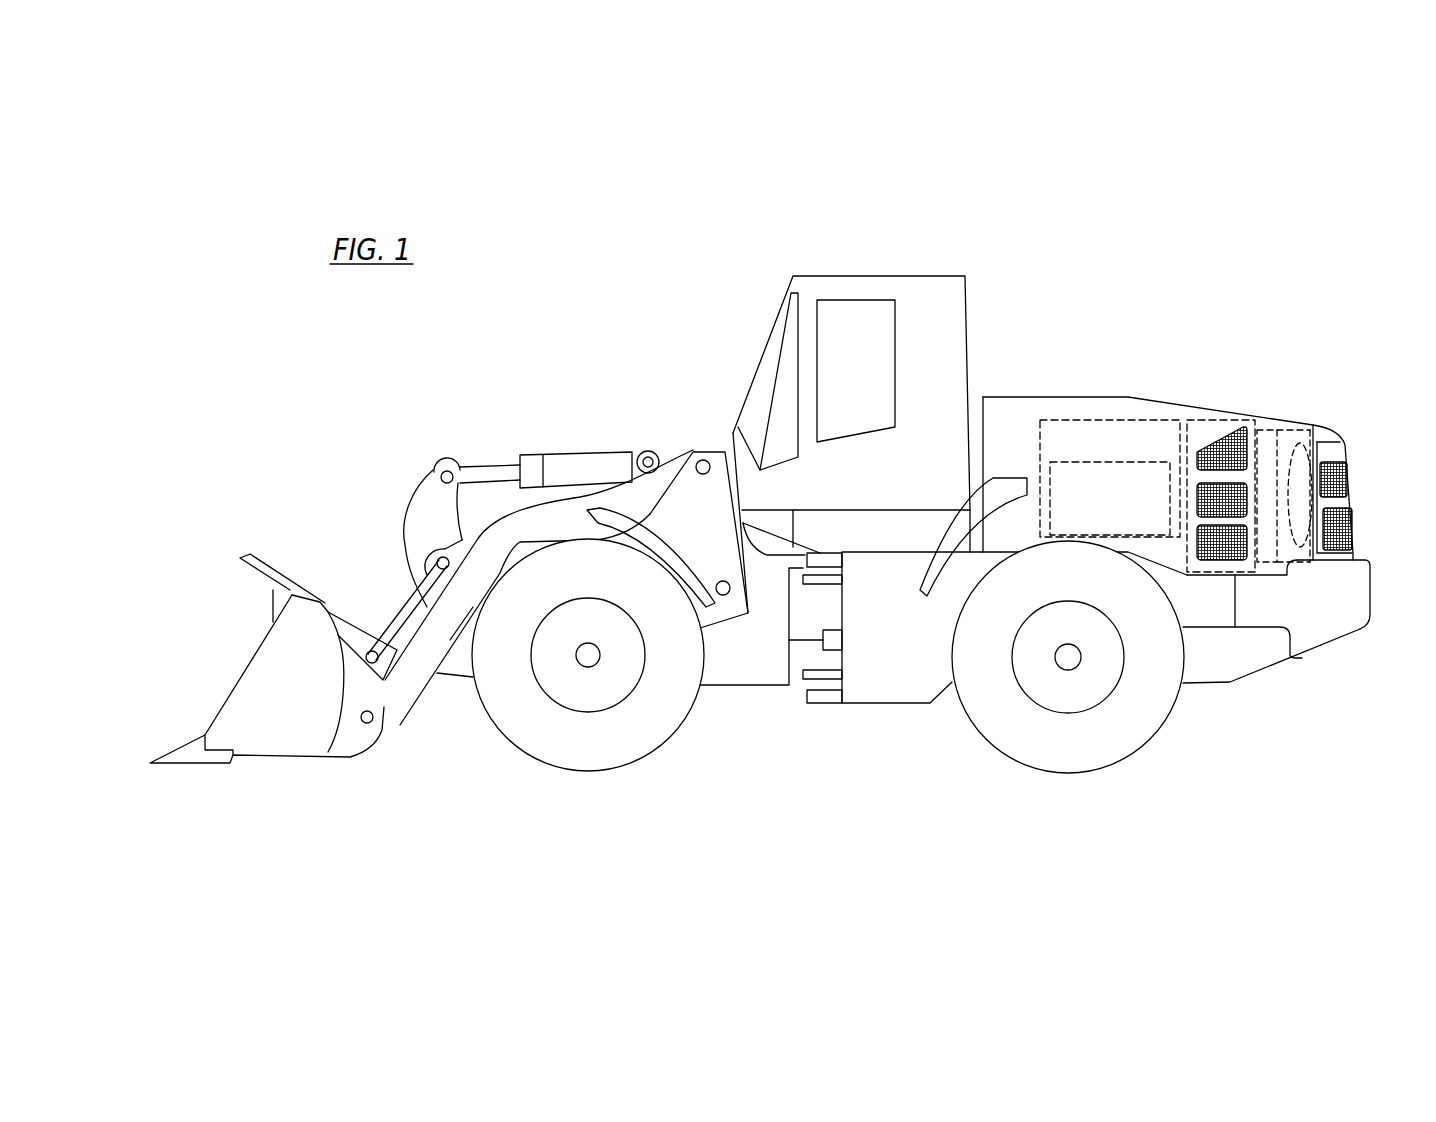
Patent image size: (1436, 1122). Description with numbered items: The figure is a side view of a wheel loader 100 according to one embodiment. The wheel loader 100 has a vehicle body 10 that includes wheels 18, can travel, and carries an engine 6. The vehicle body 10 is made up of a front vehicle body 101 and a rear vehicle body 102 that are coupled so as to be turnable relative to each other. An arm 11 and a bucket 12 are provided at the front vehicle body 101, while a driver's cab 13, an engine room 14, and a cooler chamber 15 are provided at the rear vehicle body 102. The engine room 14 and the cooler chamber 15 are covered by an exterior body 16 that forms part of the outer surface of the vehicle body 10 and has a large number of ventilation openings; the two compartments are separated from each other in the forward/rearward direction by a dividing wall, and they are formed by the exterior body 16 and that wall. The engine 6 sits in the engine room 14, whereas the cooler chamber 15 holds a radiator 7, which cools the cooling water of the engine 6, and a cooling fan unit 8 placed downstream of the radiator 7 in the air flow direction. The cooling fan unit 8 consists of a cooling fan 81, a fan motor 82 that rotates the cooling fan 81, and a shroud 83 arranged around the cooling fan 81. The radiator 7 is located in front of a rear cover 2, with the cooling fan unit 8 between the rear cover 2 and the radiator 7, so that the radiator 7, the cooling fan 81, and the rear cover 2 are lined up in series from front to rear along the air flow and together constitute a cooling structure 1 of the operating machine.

The wheel loader 100 is at (513, 248).
The cooling structure 1 is at (1377, 328).
The rear cover 2 is at (1330, 427).
The engine 6 is at (1108, 462).
The radiator 7 is at (1270, 420).
The cooling fan unit 8 is at (1295, 412).
The vehicle body 10 is at (905, 828).
The front vehicle body 101 is at (750, 710).
The rear vehicle body 102 is at (903, 710).
The arm 11 is at (498, 513).
The bucket 12 is at (250, 653).
The driver's cab 13 is at (820, 275).
The engine room 14 is at (1060, 420).
The cooler chamber 15 is at (1218, 420).
The exterior body 16 is at (1002, 397).
The wheels 18 is at (512, 745).
The cooling fan 81 is at (1347, 447).
The fan motor 82 is at (1347, 498).
The shroud 83 is at (1352, 558).